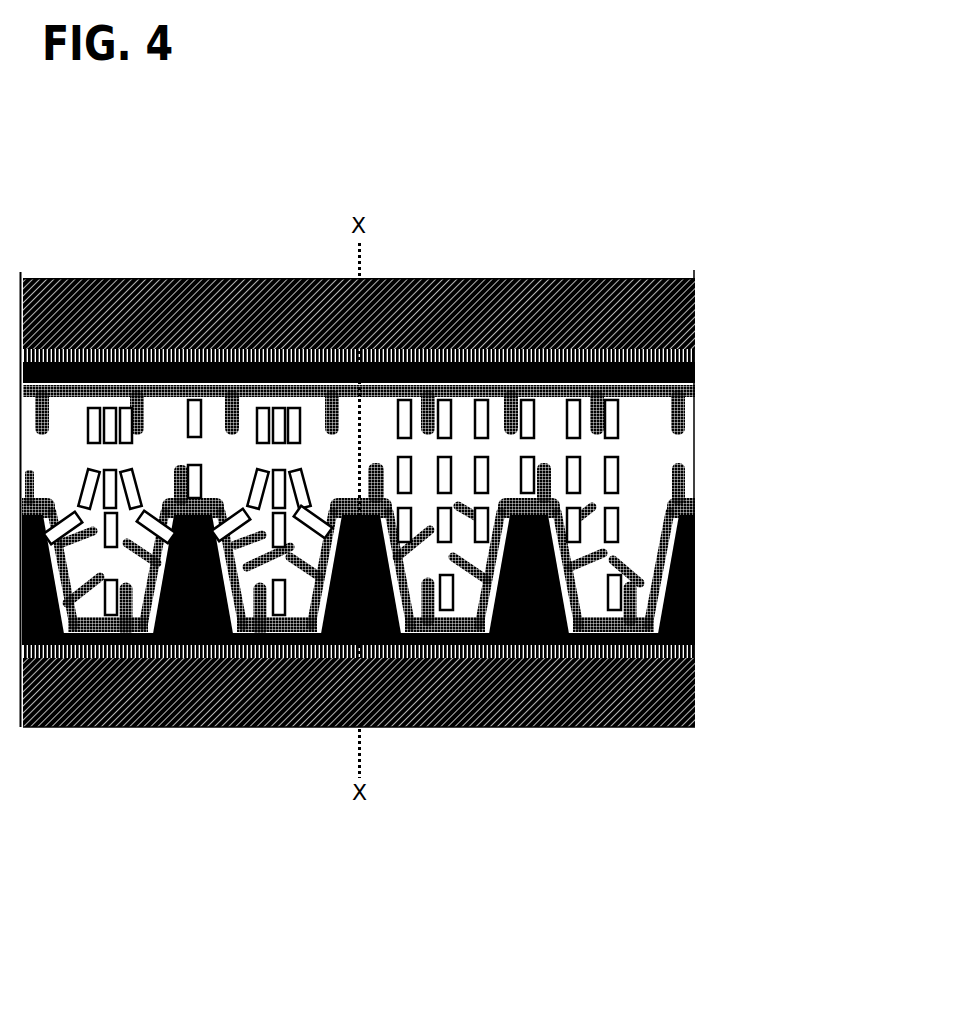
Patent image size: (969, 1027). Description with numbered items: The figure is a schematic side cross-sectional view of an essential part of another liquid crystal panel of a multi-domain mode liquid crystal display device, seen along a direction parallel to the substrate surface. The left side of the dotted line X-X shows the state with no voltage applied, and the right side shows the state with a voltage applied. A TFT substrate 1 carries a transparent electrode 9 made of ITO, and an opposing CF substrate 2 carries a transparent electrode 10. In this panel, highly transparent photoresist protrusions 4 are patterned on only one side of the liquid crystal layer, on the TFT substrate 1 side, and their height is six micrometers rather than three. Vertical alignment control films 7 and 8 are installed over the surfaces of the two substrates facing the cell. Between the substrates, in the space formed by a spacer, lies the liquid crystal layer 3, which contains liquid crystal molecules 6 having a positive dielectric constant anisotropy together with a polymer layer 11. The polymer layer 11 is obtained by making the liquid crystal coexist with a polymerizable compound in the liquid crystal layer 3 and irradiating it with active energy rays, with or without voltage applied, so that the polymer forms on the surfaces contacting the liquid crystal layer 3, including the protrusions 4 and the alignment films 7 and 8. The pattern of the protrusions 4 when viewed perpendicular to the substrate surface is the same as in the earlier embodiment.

The TFT substrate 1 is at (687, 727).
The CF substrate 2 is at (695, 292).
The liquid crystal layer 3 is at (695, 438).
The protrusions 4 is at (695, 592).
The liquid crystal molecules 6 is at (177, 728).
The vertical alignment control film 7 is at (542, 727).
The vertical alignment control film 8 is at (617, 278).
The transparent electrode 9 is at (695, 645).
The transparent electrode 10 is at (695, 338).
The polymer layer 11 is at (695, 385).